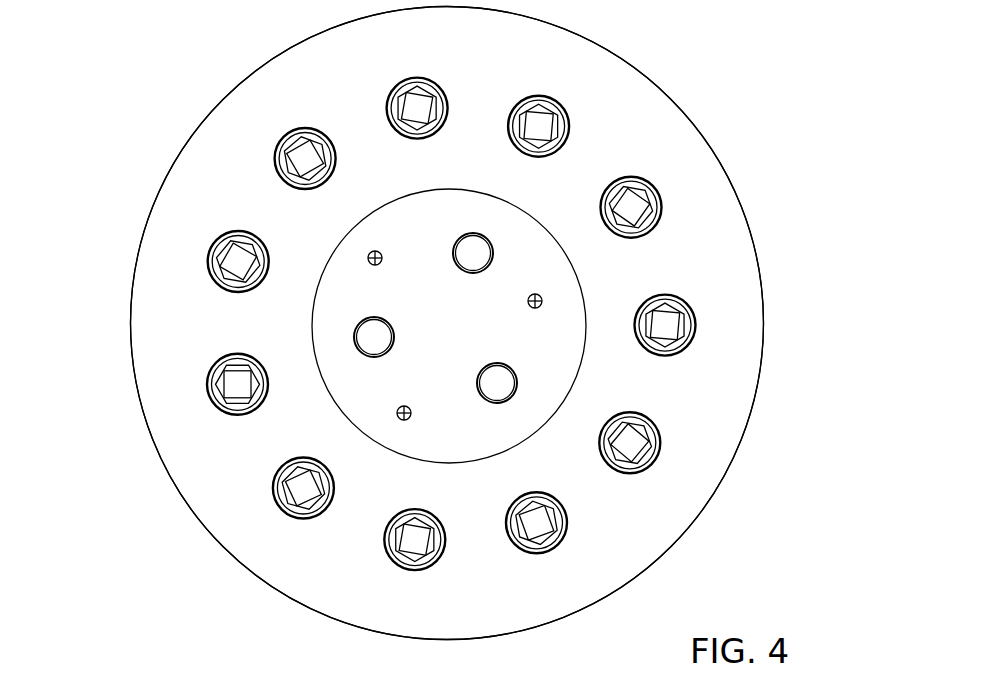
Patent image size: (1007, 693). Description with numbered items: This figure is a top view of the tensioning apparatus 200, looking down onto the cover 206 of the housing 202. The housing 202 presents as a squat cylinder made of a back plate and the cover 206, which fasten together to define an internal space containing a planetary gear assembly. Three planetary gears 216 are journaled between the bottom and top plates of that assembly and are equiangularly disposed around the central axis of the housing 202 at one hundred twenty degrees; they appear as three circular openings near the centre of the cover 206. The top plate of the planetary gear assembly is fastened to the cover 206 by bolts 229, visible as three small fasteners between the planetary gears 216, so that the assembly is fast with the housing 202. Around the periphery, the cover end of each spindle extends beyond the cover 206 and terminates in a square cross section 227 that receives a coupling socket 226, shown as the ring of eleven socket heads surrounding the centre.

The tensioning apparatus 200 is at (152, 99).
The housing 202 is at (736, 424).
The cover 206 is at (265, 543).
The planetary gears 216 is at (473, 255).
The coupling socket 226 is at (689, 121).
The square cross section 227 is at (694, 175).
The bolts 229 is at (382, 265).